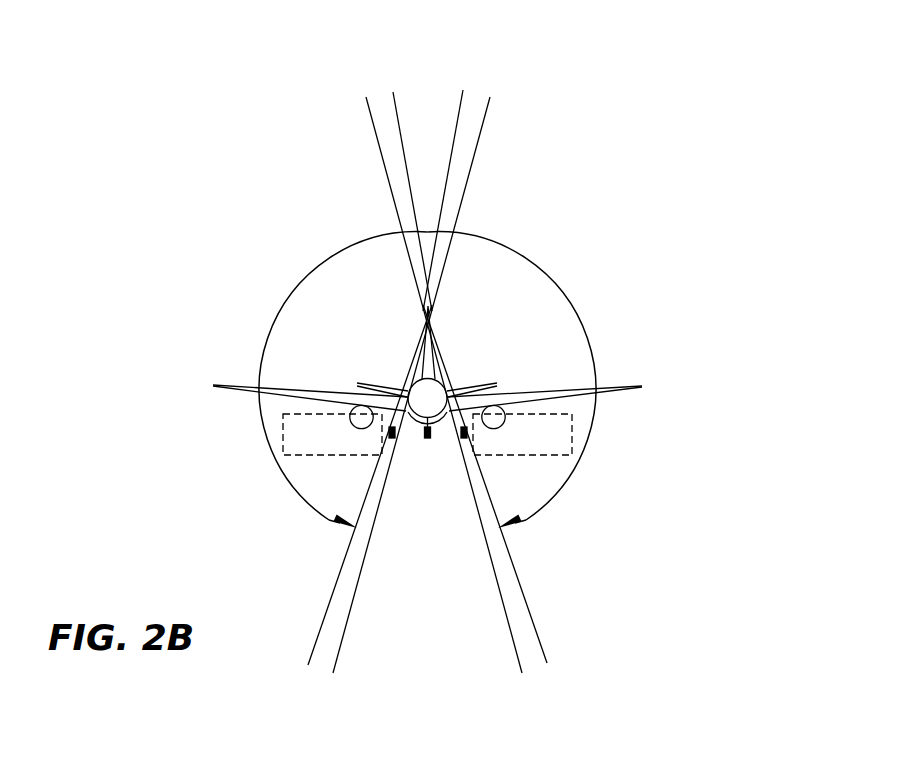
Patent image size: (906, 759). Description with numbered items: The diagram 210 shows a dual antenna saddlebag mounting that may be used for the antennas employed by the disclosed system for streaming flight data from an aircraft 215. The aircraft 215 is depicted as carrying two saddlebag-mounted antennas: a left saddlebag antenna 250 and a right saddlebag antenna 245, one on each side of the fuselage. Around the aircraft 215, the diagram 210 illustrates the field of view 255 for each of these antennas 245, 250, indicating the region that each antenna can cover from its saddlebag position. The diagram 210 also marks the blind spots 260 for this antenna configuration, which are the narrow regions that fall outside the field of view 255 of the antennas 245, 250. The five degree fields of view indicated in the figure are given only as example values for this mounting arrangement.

The diagram 210 is at (196, 243).
The aircraft 215 is at (452, 398).
The right saddlebag antenna 245 is at (317, 456).
The left saddlebag antenna 250 is at (553, 456).
The field of view 255 is at (248, 340).
The blind spots 260 is at (417, 67).